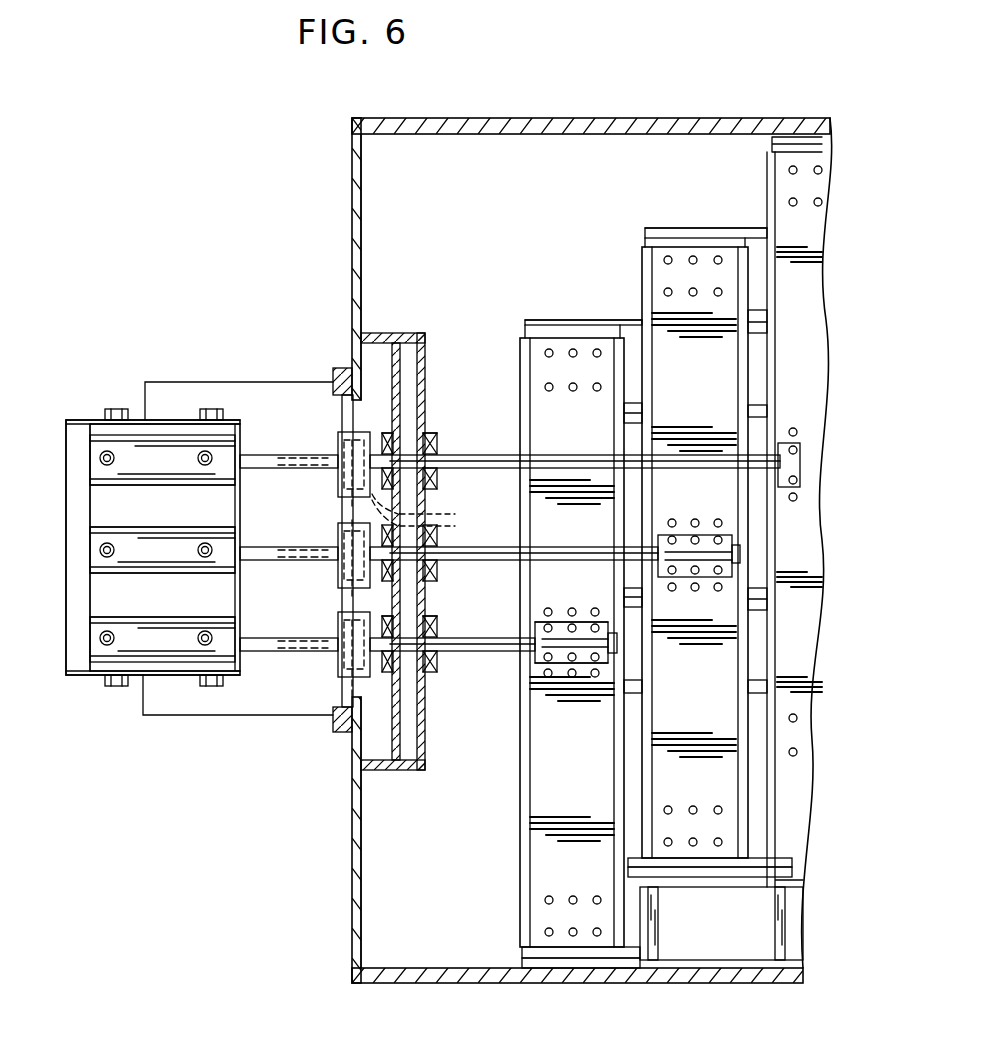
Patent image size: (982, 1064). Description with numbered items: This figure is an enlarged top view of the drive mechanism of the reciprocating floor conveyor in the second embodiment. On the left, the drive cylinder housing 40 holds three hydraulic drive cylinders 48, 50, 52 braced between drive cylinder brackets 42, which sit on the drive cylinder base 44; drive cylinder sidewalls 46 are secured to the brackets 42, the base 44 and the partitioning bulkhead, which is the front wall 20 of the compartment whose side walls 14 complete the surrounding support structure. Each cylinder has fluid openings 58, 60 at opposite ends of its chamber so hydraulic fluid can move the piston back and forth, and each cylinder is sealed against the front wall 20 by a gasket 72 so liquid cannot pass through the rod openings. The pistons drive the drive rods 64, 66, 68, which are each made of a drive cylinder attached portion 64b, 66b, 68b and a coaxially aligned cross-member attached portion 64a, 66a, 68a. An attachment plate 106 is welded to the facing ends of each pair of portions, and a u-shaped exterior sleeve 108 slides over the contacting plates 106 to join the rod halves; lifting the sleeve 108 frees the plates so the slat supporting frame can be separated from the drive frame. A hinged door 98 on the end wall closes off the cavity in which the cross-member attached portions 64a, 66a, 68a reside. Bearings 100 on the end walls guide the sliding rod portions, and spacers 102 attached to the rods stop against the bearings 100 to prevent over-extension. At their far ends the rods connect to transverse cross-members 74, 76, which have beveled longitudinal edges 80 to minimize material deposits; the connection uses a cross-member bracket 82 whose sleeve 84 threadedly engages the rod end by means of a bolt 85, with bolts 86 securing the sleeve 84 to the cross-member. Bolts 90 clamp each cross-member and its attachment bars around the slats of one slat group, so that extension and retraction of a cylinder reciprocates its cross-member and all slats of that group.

The side wall 14 is at (660, 118).
The front wall 20 is at (362, 176).
The drive cylinder housing 40 is at (104, 368).
The drive cylinder bracket 42 is at (208, 382).
The drive cylinder base 44 is at (78, 664).
The drive cylinder sidewall 46 is at (68, 420).
The drive cylinder 48 is at (90, 638).
The drive cylinder 50 is at (90, 544).
The drive cylinder 52 is at (90, 474).
The fluid opening 58 is at (98, 456).
The fluid opening 60 is at (204, 452).
The drive rod 64 is at (387, 629).
The cross-member attached portion 64a is at (462, 652).
The drive cylinder attached portion 64b is at (250, 638).
The drive rod 66 is at (449, 545).
The cross-member attached portion 66a is at (476, 560).
The drive cylinder attached portion 66b is at (250, 547).
The drive rod 68 is at (510, 459).
The cross-member attached portion 68a is at (486, 470).
The drive cylinder attached portion 68b is at (250, 455).
The gasket 72 is at (238, 492).
The cross-member 74 is at (584, 786).
The cross-member 76 is at (711, 386).
The longitudinal edge 80 is at (522, 338).
The cross-member bracket 82 is at (680, 578).
The sleeve 84 is at (556, 642).
The bolt 85 is at (617, 641).
The bolt 86 is at (718, 538).
The bolt 90 is at (597, 350).
The hinged door 98 is at (348, 402).
The bearing 100 is at (438, 445).
The spacer 102 is at (388, 440).
The attachment plate 106 is at (300, 692).
The exterior sleeve 108 is at (338, 540).